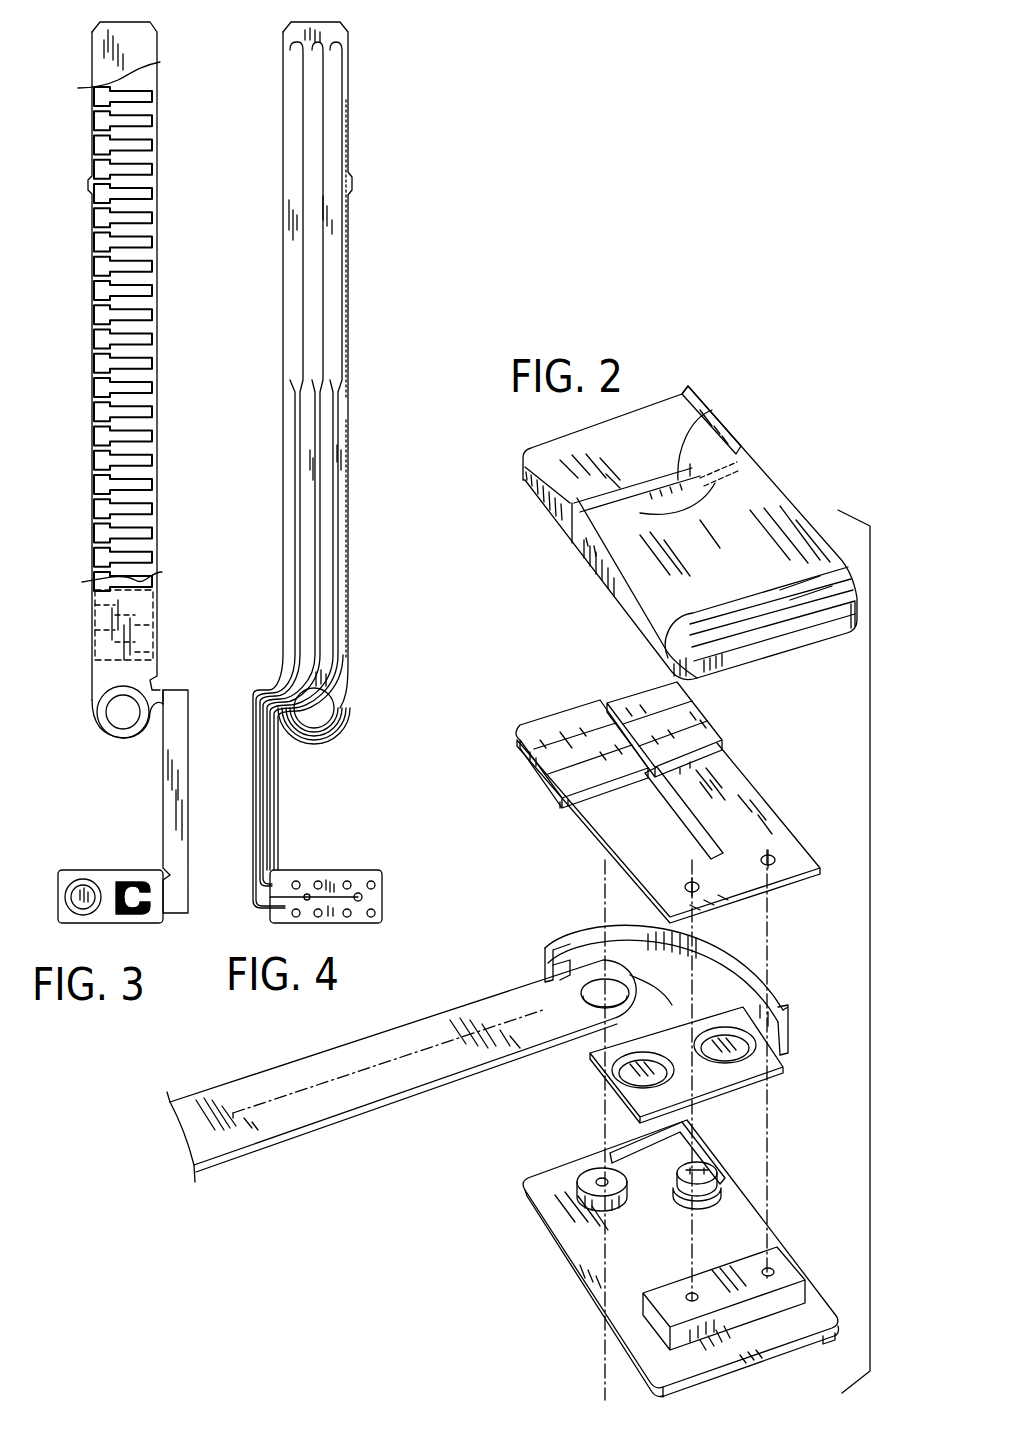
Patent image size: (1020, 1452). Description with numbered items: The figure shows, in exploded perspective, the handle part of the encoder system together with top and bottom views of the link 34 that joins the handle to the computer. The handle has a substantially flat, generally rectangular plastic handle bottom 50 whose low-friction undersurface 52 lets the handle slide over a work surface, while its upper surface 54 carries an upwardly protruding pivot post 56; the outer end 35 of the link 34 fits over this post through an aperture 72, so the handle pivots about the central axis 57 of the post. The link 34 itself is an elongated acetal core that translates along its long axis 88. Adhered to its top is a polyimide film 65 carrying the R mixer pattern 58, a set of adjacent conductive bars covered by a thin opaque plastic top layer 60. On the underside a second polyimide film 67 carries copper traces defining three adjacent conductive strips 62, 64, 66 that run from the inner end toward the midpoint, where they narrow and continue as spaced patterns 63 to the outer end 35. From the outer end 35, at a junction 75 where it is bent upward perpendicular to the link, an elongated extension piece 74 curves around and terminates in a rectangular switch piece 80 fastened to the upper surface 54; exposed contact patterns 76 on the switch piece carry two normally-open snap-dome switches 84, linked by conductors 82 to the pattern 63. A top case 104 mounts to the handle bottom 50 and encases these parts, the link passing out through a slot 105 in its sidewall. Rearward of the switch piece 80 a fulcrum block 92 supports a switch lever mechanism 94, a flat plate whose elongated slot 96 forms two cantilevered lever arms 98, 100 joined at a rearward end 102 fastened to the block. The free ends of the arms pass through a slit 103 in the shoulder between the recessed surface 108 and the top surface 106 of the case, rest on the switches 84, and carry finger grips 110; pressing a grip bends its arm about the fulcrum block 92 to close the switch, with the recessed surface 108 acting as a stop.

In FIG. 3, the link 34 is at (142, 40).
In FIG. 4, the link 34 is at (296, 42).
In FIG. 2, the link 34 is at (278, 1138).
In FIG. 3, the outer end of the link 35 is at (110, 738).
In FIG. 4, the outer end of the link 35 is at (334, 744).
In FIG. 2, the outer end of the link 35 is at (636, 965).
In FIG. 2, the handle bottom 50 is at (556, 1240).
In FIG. 2, the undersurface of the handle bottom 52 is at (594, 1278).
In FIG. 2, the upper surface of the handle bottom 54 is at (667, 1188).
In FIG. 2, the pivot post 56 is at (590, 1172).
In FIG. 2, the central axis of the post 57 is at (600, 1102).
In FIG. 3, the R mixer pattern 58 is at (148, 335).
In FIG. 3, the plastic top layer 60 is at (150, 672).
In FIG. 4, the conductive strip 62 is at (300, 144).
In FIG. 4, the patterns 63 is at (337, 568).
In FIG. 4, the conductive strip 64 is at (318, 222).
In FIG. 3, the polyimide film 65 is at (150, 470).
In FIG. 4, the conductive strip 66 is at (337, 320).
In FIG. 4, the polyimide film 67 is at (324, 266).
In FIG. 3, the aperture 72 is at (118, 698).
In FIG. 4, the aperture 72 is at (328, 722).
In FIG. 2, the aperture 72 is at (585, 990).
In FIG. 3, the extension piece 74 is at (178, 776).
In FIG. 4, the extension piece 74 is at (278, 834).
In FIG. 2, the extension piece 74 is at (735, 950).
In FIG. 3, the junction 75 is at (160, 696).
In FIG. 2, the junction 75 is at (572, 960).
In FIG. 3, the contact patterns 76 is at (128, 916).
In FIG. 3, the switch piece 80 is at (138, 870).
In FIG. 4, the switch piece 80 is at (328, 924).
In FIG. 2, the switch piece 80 is at (782, 1060).
In FIG. 4, the conductors 82 is at (362, 886).
In FIG. 3, the snap-dome switch 84 is at (82, 878).
In FIG. 2, the snap-dome switch 84 is at (650, 1062).
In FIG. 2, the long axis of the link 88 is at (390, 1060).
In FIG. 2, the fulcrum block 92 is at (724, 1282).
In FIG. 2, the switch lever mechanism 94 is at (770, 794).
In FIG. 2, the elongated slot 96 is at (668, 808).
In FIG. 2, the lever arm 98 is at (628, 818).
In FIG. 2, the lever arm 100 is at (722, 782).
In FIG. 2, the rearward end 102 is at (755, 892).
In FIG. 2, the slit 103 is at (700, 414).
In FIG. 2, the top case 104 is at (663, 533).
In FIG. 2, the slot 105 is at (568, 548).
In FIG. 2, the upper surface of the handle case 106 is at (736, 553).
In FIG. 2, the recessed surface 108 is at (606, 456).
In FIG. 2, the finger grips 110 is at (662, 708).